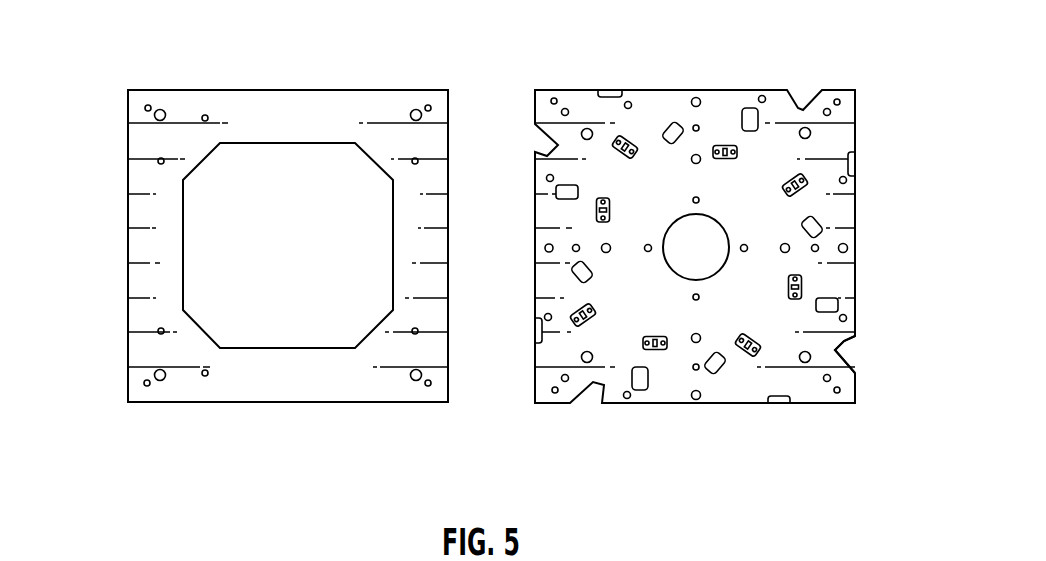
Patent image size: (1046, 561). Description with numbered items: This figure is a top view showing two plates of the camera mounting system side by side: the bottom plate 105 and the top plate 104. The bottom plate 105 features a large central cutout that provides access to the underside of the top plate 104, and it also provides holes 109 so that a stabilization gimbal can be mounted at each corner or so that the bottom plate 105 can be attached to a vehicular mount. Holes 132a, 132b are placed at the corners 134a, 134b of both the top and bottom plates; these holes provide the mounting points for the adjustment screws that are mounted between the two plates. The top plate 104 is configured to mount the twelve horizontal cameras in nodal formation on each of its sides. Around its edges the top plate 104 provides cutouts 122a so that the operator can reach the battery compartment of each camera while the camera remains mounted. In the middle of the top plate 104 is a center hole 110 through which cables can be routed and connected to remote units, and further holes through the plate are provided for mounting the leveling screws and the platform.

The top plate 104 is at (788, 151).
The bottom plate 105 is at (150, 148).
The holes 109 is at (210, 266).
The center hole 110 is at (678, 258).
The cutouts 122a is at (848, 352).
The holes 132a is at (147, 386).
The holes 132b is at (555, 393).
The corners 134a is at (148, 356).
The corners 134b is at (553, 358).